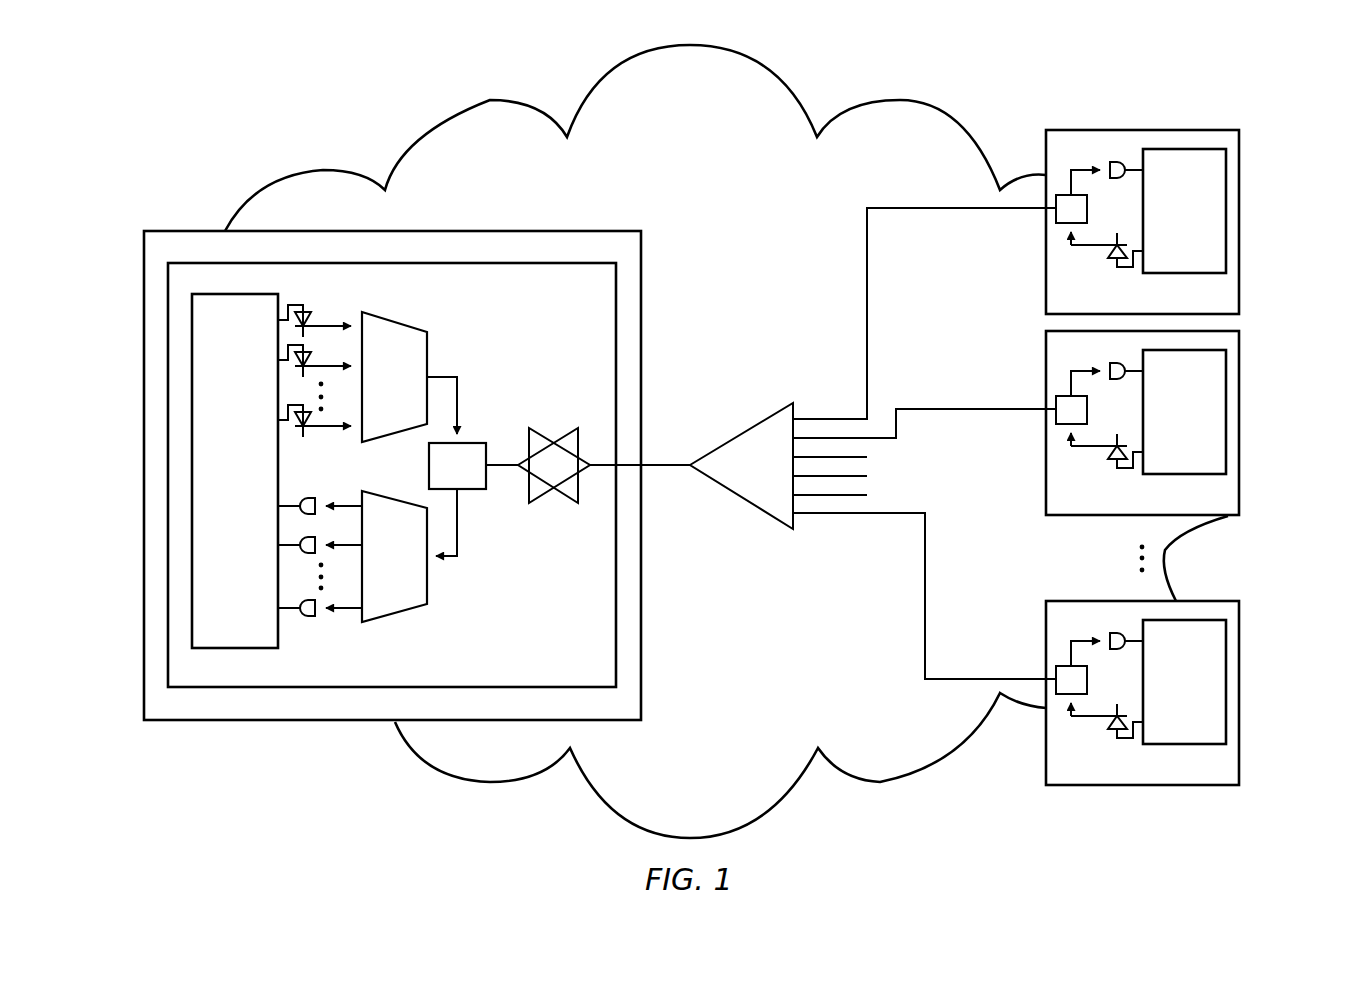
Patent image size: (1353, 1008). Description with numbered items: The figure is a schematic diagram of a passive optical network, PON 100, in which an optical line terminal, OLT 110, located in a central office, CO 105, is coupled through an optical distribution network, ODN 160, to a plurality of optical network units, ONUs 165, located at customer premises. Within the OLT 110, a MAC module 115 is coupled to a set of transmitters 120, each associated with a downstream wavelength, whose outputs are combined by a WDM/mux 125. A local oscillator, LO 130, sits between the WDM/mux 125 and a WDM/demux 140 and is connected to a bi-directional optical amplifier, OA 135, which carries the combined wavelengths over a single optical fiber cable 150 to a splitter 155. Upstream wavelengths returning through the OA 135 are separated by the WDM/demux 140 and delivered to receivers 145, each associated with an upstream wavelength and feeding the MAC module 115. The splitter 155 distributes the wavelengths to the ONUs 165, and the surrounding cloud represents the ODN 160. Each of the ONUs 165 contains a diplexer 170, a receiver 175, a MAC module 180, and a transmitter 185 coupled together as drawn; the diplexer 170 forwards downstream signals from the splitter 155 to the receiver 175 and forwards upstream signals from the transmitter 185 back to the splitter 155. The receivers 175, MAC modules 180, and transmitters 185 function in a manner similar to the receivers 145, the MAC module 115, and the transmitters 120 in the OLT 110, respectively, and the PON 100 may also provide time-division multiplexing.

The passive optical network 100 is at (172, 89).
The central office 105 is at (143, 280).
The optical line terminal 110 is at (167, 341).
The MAC module 115 is at (250, 502).
The transmitters 120 is at (303, 303).
The WDM/mux 125 is at (427, 353).
The local oscillator 130 is at (479, 490).
The bi-directional optical amplifier 135 is at (540, 438).
The WDM/demux 140 is at (427, 583).
The receivers 145 is at (310, 617).
The optical fiber cable 150 is at (663, 463).
The splitter 155 is at (735, 504).
The optical distribution network 160 is at (444, 112).
The optical network units 165 is at (1239, 221).
The diplexers 170 is at (1061, 225).
The receivers 175 is at (1117, 161).
The MAC modules 180 is at (1190, 148).
The transmitters 185 is at (1112, 259).